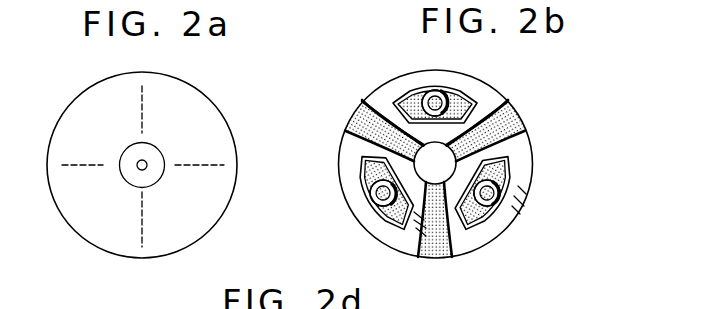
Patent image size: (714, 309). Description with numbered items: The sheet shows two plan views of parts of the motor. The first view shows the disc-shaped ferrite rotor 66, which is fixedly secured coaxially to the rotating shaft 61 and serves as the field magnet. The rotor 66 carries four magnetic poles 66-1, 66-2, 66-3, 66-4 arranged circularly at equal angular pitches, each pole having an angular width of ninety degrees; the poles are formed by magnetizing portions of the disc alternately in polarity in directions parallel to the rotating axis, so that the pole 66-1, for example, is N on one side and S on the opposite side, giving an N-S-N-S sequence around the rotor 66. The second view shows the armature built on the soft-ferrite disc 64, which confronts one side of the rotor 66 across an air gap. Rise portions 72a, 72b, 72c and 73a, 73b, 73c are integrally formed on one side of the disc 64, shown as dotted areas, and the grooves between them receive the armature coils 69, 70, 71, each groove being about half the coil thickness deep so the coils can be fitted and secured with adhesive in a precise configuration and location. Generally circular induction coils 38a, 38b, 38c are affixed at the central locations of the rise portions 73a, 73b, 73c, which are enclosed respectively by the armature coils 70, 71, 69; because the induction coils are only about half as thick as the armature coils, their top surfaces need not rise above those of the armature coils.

In FIG. 2A, the rotating shaft 61 is at (138, 162).
In FIG. 2A, the rotor 66 is at (184, 80).
In FIG. 2A, the magnetic pole 66-1 is at (105, 92).
In FIG. 2A, the magnetic pole 66-2 is at (222, 137).
In FIG. 2A, the magnetic pole 66-3 is at (178, 238).
In FIG. 2A, the magnetic pole 66-4 is at (113, 242).
In FIG. 2B, the soft-ferrite disc 64 is at (526, 88).
In FIG. 2B, the armature coil 69 is at (435, 77).
In FIG. 2B, the armature coil 70 is at (525, 207).
In FIG. 2B, the armature coil 71 is at (355, 210).
In FIG. 2B, the rise portion 72a is at (508, 118).
In FIG. 2B, the rise portion 72b is at (436, 258).
In FIG. 2B, the rise portion 72c is at (357, 118).
In FIG. 2B, the rise portion 73a is at (484, 214).
In FIG. 2B, the rise portion 73b is at (394, 213).
In FIG. 2B, the rise portion 73c is at (407, 100).
In FIG. 2B, the induction coil 38a is at (505, 173).
In FIG. 2B, the induction coil 38b is at (362, 179).
In FIG. 2B, the induction coil 38c is at (460, 92).